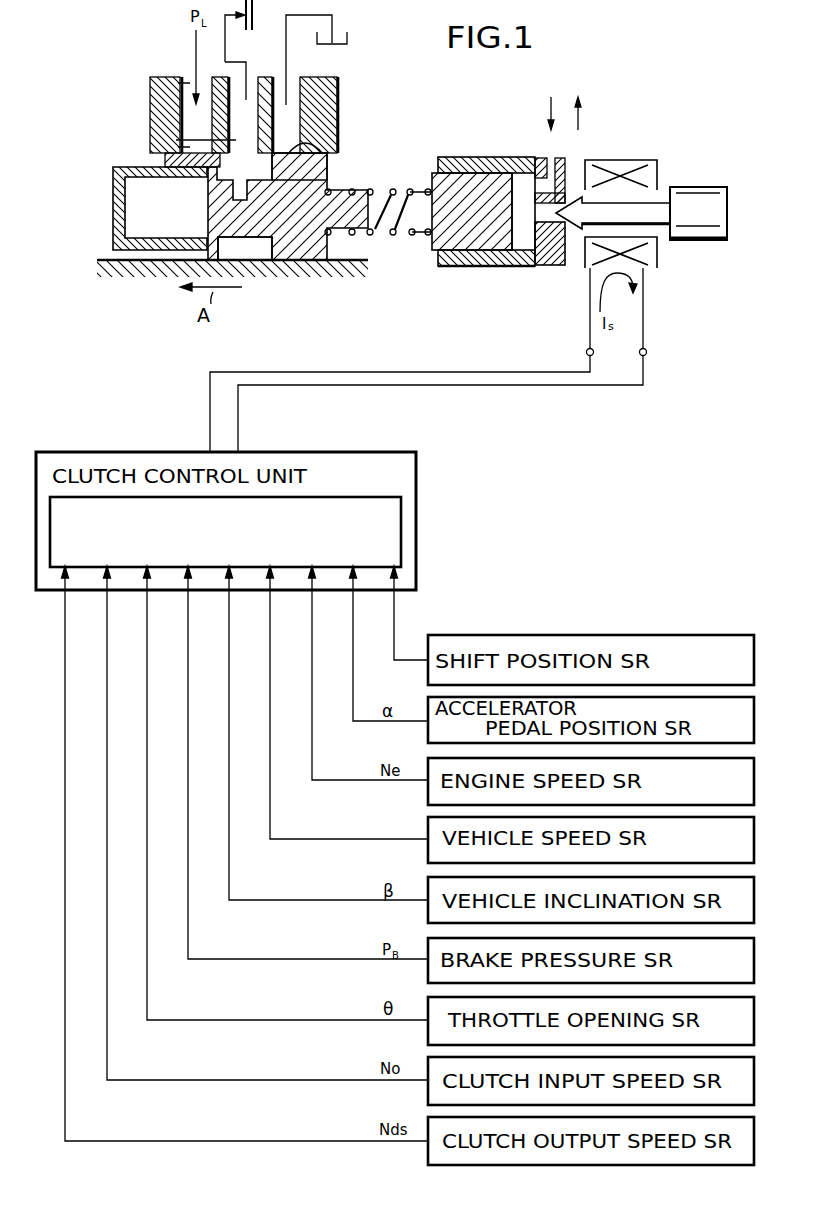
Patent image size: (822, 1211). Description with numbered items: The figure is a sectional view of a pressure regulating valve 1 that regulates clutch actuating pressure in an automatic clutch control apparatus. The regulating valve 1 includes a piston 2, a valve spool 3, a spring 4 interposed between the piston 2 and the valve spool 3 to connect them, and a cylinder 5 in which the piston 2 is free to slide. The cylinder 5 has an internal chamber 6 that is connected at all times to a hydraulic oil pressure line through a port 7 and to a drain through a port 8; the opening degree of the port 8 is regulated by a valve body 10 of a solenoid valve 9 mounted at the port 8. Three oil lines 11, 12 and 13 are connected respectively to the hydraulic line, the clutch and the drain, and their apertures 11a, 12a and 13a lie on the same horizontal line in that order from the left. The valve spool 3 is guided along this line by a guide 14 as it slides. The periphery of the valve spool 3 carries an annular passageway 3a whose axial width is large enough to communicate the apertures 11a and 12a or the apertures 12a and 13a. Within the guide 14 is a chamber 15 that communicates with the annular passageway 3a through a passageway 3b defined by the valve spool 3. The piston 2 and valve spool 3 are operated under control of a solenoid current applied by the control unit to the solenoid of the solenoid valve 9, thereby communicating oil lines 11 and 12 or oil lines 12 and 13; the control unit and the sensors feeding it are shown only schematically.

The pressure regulating valve 1 is at (434, 116).
The piston 2 is at (482, 262).
The valve spool 3 is at (300, 238).
The annular passageway 3a is at (265, 168).
The passageway 3b is at (235, 218).
The spring 4 is at (397, 238).
The cylinder 5 is at (517, 266).
The internal chamber 6 is at (514, 177).
The port 7 is at (548, 158).
The port 8 is at (565, 242).
The solenoid valve 9 is at (666, 161).
The valve body 10 is at (661, 232).
The oil line 11 is at (188, 84).
The aperture 11a is at (167, 153).
The oil line 12 is at (233, 111).
The aperture 12a is at (233, 140).
The oil line 13 is at (292, 98).
The aperture 13a is at (310, 146).
The guide 14 is at (113, 215).
The chamber 15 is at (143, 232).